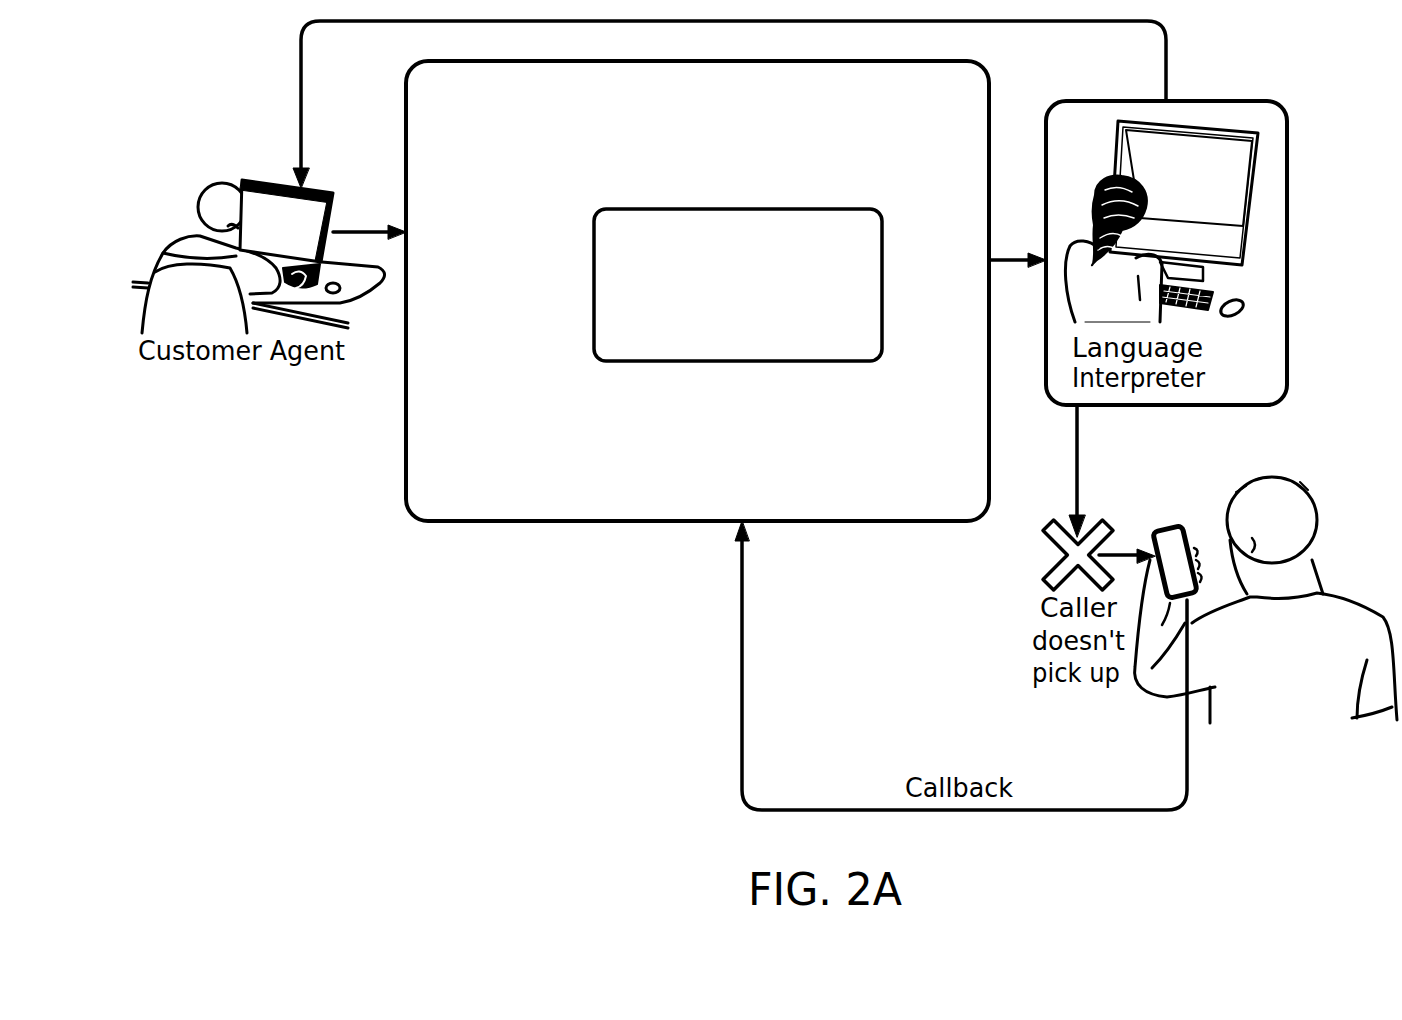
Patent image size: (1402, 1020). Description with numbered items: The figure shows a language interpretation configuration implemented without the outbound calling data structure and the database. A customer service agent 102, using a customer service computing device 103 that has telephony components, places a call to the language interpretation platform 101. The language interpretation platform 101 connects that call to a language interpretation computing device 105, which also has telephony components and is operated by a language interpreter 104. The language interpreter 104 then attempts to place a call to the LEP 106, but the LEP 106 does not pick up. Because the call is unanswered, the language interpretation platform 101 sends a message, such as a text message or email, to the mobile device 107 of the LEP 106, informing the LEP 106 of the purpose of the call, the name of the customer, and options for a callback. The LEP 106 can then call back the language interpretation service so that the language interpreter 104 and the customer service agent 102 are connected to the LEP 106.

The language interpretation platform 101 is at (594, 251).
The customer service agent 102 is at (222, 183).
The customer service computing device 103 is at (336, 190).
The language interpreter 104 is at (1132, 304).
The language interpretation computing device 105 is at (1217, 191).
The LEP 106 is at (1276, 474).
The mobile device 107 is at (1166, 524).